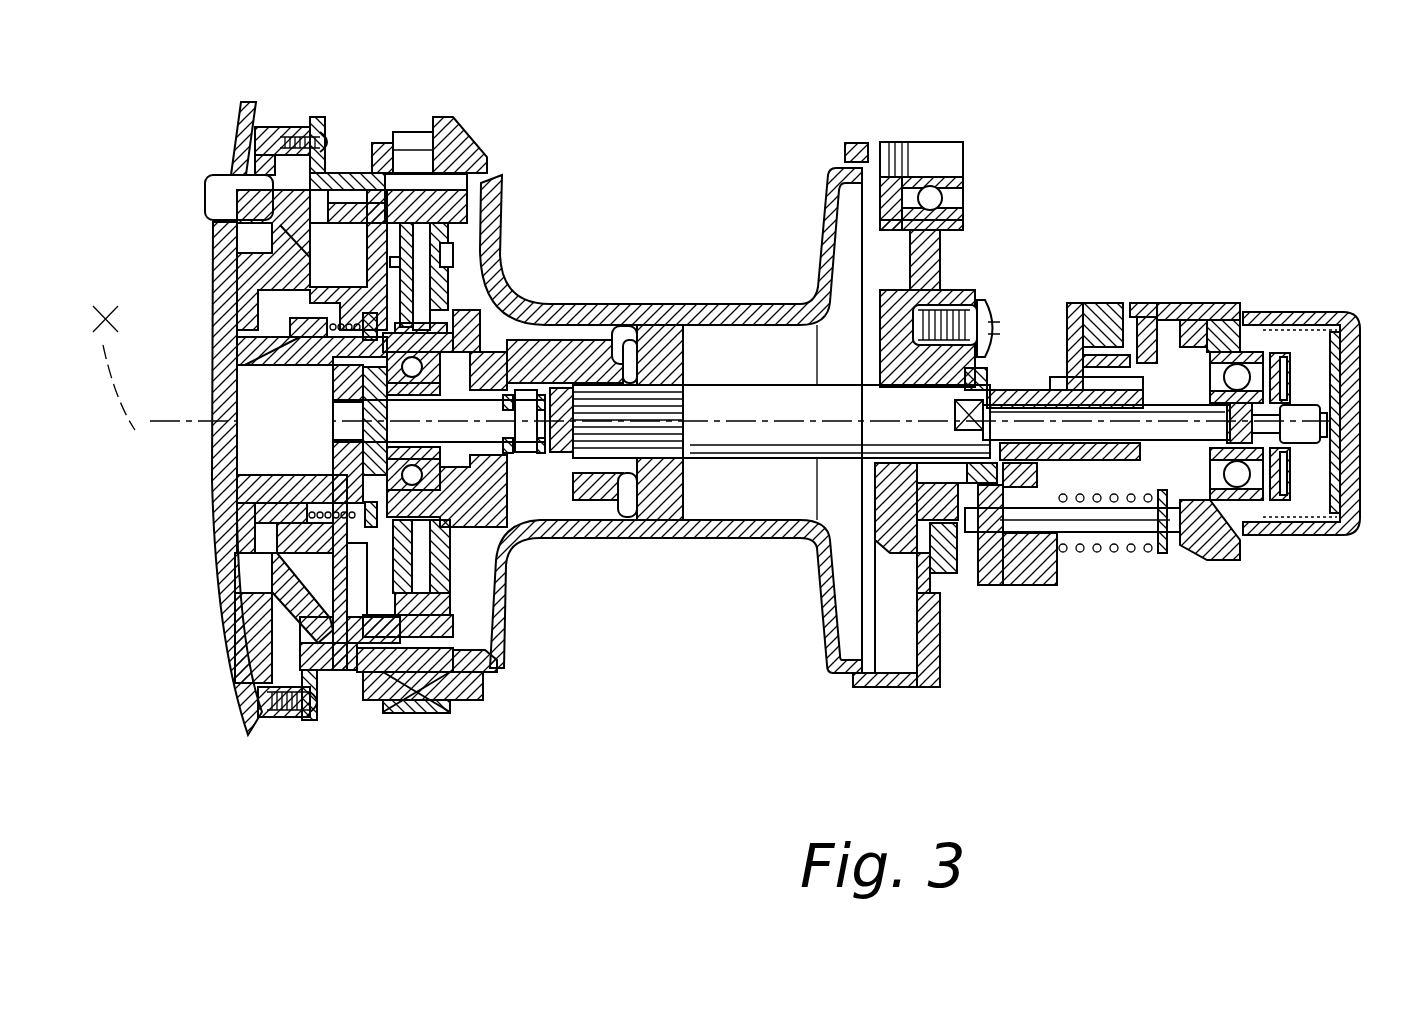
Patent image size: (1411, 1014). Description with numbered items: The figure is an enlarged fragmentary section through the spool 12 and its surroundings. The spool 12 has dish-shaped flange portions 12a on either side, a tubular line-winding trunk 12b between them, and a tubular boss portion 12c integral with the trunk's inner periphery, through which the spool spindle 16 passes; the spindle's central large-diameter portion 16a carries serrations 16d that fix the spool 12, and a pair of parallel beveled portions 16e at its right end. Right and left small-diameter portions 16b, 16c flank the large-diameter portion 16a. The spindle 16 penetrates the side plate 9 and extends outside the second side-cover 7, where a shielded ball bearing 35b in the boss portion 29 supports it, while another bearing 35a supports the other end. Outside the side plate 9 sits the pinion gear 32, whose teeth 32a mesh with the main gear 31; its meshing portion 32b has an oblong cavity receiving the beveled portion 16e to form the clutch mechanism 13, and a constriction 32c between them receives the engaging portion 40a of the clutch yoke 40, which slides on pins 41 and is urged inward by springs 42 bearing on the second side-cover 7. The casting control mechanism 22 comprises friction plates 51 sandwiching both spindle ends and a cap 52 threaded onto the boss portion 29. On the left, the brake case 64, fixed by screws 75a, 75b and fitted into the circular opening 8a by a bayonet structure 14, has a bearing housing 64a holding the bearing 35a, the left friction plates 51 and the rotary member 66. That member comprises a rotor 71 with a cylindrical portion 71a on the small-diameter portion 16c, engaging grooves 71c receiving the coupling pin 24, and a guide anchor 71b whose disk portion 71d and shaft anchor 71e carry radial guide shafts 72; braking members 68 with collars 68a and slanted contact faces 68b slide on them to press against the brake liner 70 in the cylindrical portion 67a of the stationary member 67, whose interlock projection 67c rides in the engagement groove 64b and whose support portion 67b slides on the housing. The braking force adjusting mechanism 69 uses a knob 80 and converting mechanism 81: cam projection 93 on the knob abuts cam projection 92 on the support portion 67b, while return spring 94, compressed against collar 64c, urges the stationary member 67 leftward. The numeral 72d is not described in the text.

The second side-cover 7 is at (1205, 540).
The circular opening 8a is at (452, 238).
The side plate 9 is at (935, 275).
The spool 12 is at (699, 297).
The flange portions 12a is at (486, 252).
The line-winding trunk 12b is at (665, 302).
The boss portion 12c is at (684, 358).
The clutch mechanism 13 is at (943, 414).
The bayonet structure 14 is at (411, 161).
The spool spindle 16 is at (718, 445).
The large-diameter portion 16a is at (770, 442).
The right small-diameter portion 16b is at (1090, 540).
The left small-diameter portion 16c is at (505, 455).
The serrations 16d is at (612, 455).
The beveled portion 16e is at (960, 530).
The casting control mechanism 22 is at (1310, 290).
The coupling pin 24 is at (556, 393).
The boss portion 29 is at (1235, 360).
The main gear 31 is at (1075, 303).
The pinion gear 32 is at (1024, 387).
The teeth 32a is at (1160, 380).
The meshing portion 32b is at (1010, 585).
The constriction 32c is at (1005, 388).
The bearing 35a is at (493, 577).
The bearing 35b is at (1225, 330).
The clutch yoke 40 is at (1045, 565).
The engaging portion 40a is at (1120, 330).
The pins 41 is at (1123, 550).
The spring 42 is at (1150, 553).
The friction plates 51 is at (275, 382).
The cap 52 is at (1343, 540).
The brake case 64 is at (357, 160).
The bearing housing 64a is at (343, 670).
The engagement groove 64b is at (490, 670).
The collar 64c is at (335, 360).
The rotary member 66 is at (471, 298).
The stationary member 67 is at (368, 255).
The cylindrical portion 67a is at (398, 712).
The support portion 67b is at (290, 560).
The interlock projection 67c is at (430, 697).
The braking members 68 is at (487, 310).
The collar 68a is at (385, 600).
The contact faces 68b is at (440, 690).
The braking force adjusting mechanism 69 is at (273, 230).
The brake liner 70 is at (455, 233).
The rotor 71 is at (498, 378).
The cylindrical portion 71a is at (439, 421).
The guide anchor 71b is at (498, 321).
The engaging grooves 71c is at (540, 450).
The disk portion 71d is at (573, 333).
The shaft anchor 71e is at (460, 246).
The guide shafts 72 is at (474, 291).
The plate portion 72d is at (497, 540).
The screw 75a is at (290, 107).
The screw 75b is at (290, 717).
The knob 80 is at (296, 198).
The converting mechanism 81 is at (297, 613).
The cam projection 92 is at (349, 207).
The cam projection 93 is at (286, 258).
The return spring 94 is at (300, 332).